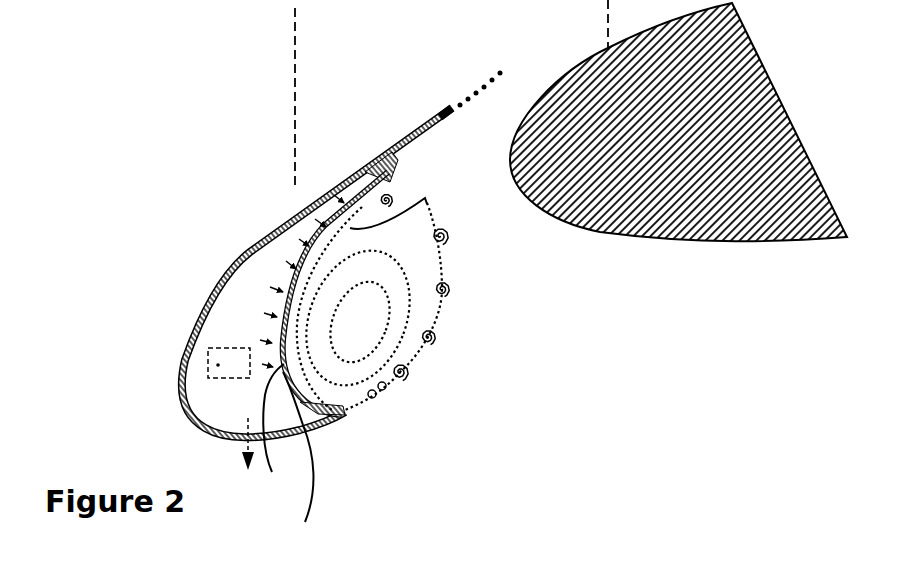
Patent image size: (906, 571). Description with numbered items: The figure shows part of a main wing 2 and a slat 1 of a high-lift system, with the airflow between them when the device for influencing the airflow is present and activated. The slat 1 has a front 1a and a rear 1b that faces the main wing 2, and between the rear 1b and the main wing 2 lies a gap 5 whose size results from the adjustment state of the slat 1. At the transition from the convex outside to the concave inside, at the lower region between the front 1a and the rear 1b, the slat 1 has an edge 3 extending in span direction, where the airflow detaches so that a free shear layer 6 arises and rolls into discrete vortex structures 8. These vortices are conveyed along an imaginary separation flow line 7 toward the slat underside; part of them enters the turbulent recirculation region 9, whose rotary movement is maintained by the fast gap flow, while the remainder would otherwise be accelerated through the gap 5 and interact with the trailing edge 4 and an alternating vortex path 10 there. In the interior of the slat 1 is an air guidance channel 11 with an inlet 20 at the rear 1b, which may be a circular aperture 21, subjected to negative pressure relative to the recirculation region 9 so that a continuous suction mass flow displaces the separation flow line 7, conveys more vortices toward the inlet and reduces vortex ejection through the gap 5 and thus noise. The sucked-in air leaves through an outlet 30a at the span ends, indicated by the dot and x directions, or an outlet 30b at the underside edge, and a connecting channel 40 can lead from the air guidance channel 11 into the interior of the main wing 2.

The slat 1 is at (382, 166).
The front 1a is at (250, 252).
The rear 1b is at (408, 209).
The main wing 2 is at (678, 240).
The edge 3 is at (343, 422).
The trailing edge 4 is at (446, 104).
The gap 5 is at (468, 165).
The free shear layer 6 is at (389, 407).
The separation flow line 7 is at (418, 357).
The vortex structures 8 is at (454, 241).
The recirculation region 9 is at (347, 341).
The alternating vortex path 10 is at (486, 70).
The air guidance channel 11 is at (202, 400).
The inlet 20 is at (282, 300).
The circular aperture 21 is at (287, 460).
The outlet 30a is at (208, 363).
The outlet 30b is at (240, 447).
The connecting channel 40 is at (295, 72).